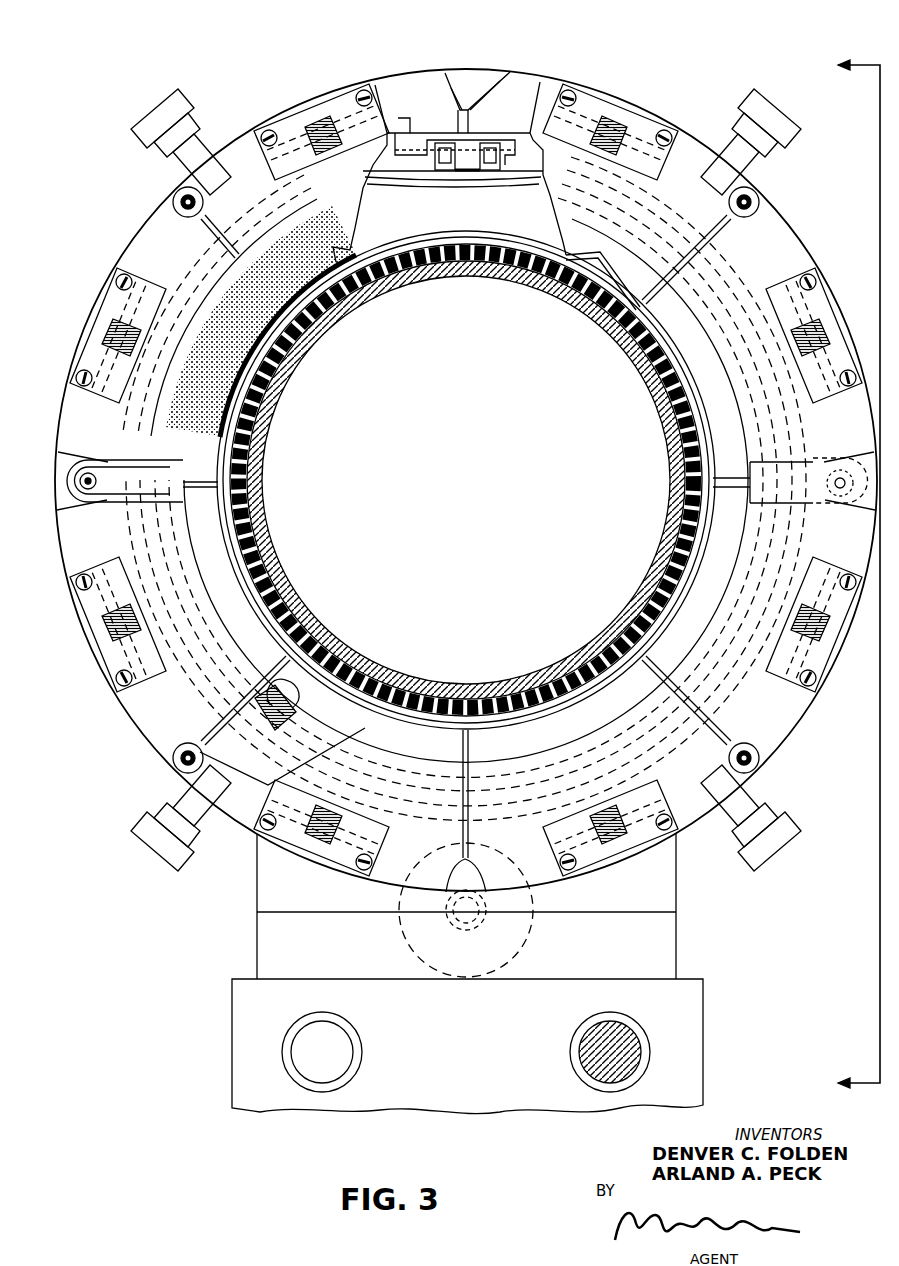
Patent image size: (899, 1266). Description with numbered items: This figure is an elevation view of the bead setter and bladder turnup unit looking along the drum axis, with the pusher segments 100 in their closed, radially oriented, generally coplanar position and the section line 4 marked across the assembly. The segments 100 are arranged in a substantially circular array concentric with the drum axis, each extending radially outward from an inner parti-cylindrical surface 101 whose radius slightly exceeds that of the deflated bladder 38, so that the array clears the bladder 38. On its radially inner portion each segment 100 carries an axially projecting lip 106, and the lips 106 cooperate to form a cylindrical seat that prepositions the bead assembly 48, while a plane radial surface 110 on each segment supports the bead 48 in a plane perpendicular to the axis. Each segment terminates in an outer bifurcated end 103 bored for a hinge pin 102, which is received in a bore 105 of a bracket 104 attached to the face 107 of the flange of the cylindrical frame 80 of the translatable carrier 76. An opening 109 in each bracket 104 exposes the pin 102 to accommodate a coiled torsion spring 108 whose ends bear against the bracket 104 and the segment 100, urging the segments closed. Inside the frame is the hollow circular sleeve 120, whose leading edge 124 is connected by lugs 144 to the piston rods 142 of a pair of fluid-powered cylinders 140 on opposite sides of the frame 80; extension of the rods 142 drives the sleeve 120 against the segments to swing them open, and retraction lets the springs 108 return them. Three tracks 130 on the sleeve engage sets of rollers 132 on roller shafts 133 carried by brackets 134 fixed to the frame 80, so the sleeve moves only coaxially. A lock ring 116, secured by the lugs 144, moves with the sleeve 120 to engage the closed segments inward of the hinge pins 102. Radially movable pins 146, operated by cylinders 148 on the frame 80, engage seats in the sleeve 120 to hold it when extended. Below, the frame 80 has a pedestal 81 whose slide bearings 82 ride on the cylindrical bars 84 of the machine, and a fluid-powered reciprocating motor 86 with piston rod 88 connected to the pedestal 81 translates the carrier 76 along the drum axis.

The section line 4- 4 is at (842, 574).
The bladder 38 is at (598, 662).
The bead assembly 48 is at (350, 244).
The translatable carrier 76 is at (678, 942).
The cylindrical frame 80 is at (382, 112).
The pedestal 81 is at (700, 1002).
The slide bearings 82 is at (284, 1050).
The cylindrical bars 84 is at (320, 1058).
The fluid-powered reciprocating motor 86 is at (442, 924).
The piston rod 88 is at (500, 926).
The segments 100 is at (790, 244).
The inner parti-cylindrical surface 101 is at (472, 700).
The hinge pin 102 is at (240, 145).
The outer bifurcated end 103 is at (500, 72).
The bracket 104 is at (285, 108).
The bore 105 is at (355, 125).
The lip 106 is at (352, 256).
The face of the flange 107 is at (462, 68).
The coiled torsion spring 108 is at (323, 122).
The opening 109 is at (272, 128).
The plane radial surface 110 is at (686, 592).
The lock ring 116 is at (762, 760).
The sleeve 120 is at (443, 188).
The leading edge 124 is at (465, 186).
The tracks 130 is at (412, 186).
The rollers 132 is at (494, 172).
The roller shaft 133 is at (463, 100).
The bracket 134 is at (482, 108).
The fluid-powered cylinders 140 is at (110, 458).
The piston rod 142 is at (98, 496).
The lug 144 is at (755, 482).
The pins 146 is at (300, 716).
The cylinders 148 is at (150, 142).